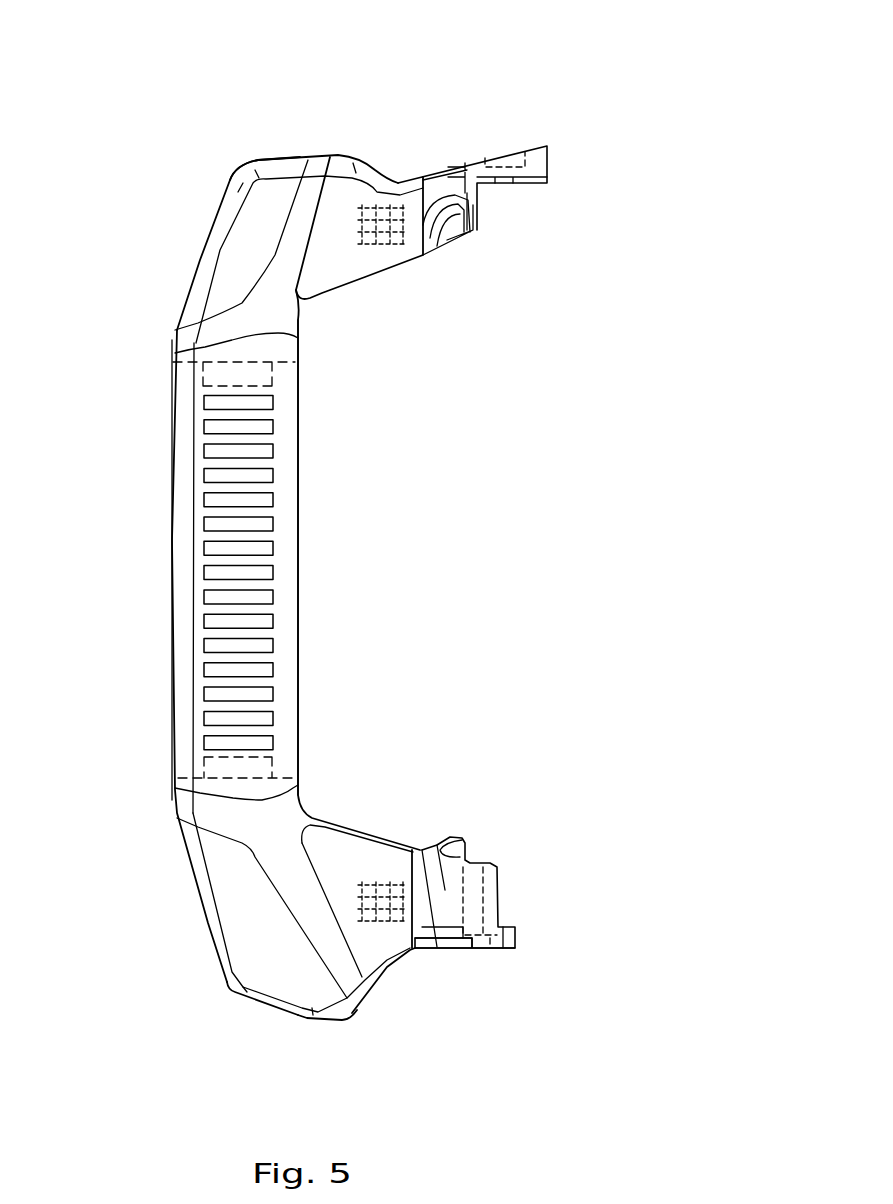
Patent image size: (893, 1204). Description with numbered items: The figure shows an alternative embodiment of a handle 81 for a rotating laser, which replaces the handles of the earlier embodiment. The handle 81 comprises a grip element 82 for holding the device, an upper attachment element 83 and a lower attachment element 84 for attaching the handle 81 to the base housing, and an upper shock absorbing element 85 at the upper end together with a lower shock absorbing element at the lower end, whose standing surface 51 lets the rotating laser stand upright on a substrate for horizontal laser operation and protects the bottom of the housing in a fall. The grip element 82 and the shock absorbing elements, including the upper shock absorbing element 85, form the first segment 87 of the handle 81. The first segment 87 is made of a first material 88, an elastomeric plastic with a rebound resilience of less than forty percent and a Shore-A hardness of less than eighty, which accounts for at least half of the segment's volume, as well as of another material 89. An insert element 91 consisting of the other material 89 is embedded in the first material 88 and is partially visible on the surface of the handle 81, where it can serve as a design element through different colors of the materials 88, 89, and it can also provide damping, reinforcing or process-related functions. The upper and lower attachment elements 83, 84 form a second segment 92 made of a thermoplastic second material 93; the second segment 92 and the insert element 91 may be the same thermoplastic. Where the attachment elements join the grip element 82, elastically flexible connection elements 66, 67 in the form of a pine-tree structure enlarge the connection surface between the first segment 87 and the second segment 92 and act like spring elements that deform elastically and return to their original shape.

The standing surface 51 is at (323, 1021).
The elastically flexible connection element 66 is at (397, 180).
The elastically flexible connection element 67 is at (372, 878).
The handle 81 is at (134, 96).
The grip element 82 is at (297, 522).
The upper attachment element 83 is at (533, 145).
The lower attachment element 84 is at (510, 950).
The upper shock absorbing element 85 is at (277, 155).
The first segment 87 is at (135, 503).
The first material 88 is at (240, 258).
The other material 89 is at (207, 337).
The insert element 91 is at (218, 572).
The second segment 92 is at (506, 211).
The second material 93 is at (445, 228).